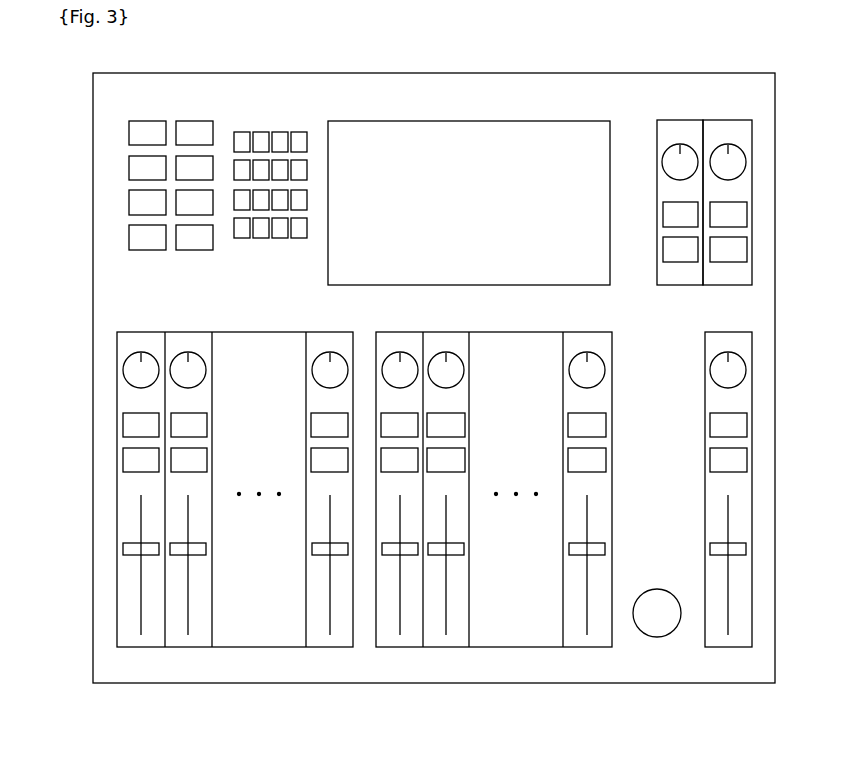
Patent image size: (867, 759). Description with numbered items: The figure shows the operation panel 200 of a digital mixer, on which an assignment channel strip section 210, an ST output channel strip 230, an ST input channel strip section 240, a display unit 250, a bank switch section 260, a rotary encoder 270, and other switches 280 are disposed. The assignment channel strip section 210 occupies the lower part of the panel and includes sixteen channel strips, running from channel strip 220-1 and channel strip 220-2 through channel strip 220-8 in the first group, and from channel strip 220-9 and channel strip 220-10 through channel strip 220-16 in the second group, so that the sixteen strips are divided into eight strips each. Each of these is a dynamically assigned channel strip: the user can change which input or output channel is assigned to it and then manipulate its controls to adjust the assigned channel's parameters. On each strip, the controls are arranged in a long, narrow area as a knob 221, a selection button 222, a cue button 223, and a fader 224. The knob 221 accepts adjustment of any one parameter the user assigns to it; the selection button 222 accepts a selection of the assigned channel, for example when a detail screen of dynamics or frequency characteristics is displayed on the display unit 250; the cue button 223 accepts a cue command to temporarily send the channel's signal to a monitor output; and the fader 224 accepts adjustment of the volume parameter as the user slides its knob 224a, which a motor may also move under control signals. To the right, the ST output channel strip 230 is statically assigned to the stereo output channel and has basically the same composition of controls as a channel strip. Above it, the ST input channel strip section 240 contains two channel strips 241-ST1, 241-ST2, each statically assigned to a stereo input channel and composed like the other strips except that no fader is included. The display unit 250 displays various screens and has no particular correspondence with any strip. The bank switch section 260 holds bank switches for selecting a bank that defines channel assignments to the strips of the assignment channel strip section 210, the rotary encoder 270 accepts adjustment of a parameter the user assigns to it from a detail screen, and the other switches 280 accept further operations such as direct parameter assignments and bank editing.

The operation panel 200 is at (713, 72).
The assignment channel strip section 210 is at (327, 510).
The channel strip 220-1 is at (105, 474).
The channel strip 220-2 is at (198, 320).
The channel strip 220-8 is at (329, 330).
The channel strip 220-9 is at (399, 330).
The channel strip 220-10 is at (452, 330).
The channel strip 220-16 is at (586, 330).
The knob 221 is at (123, 369).
The selection button 222 is at (122, 423).
The cue button 223 is at (122, 458).
The fader 224 is at (137, 519).
The knob 224a is at (122, 548).
The ST output channel strip 230 is at (705, 357).
The ST input channel strip section 240 is at (690, 201).
The channel strip 241-ST1 is at (670, 287).
The channel strip 241-ST2 is at (727, 287).
The display unit 250 is at (588, 120).
The bank switch section 260 is at (120, 121).
The rotary encoder 270 is at (660, 588).
The other switches 280 is at (289, 127).